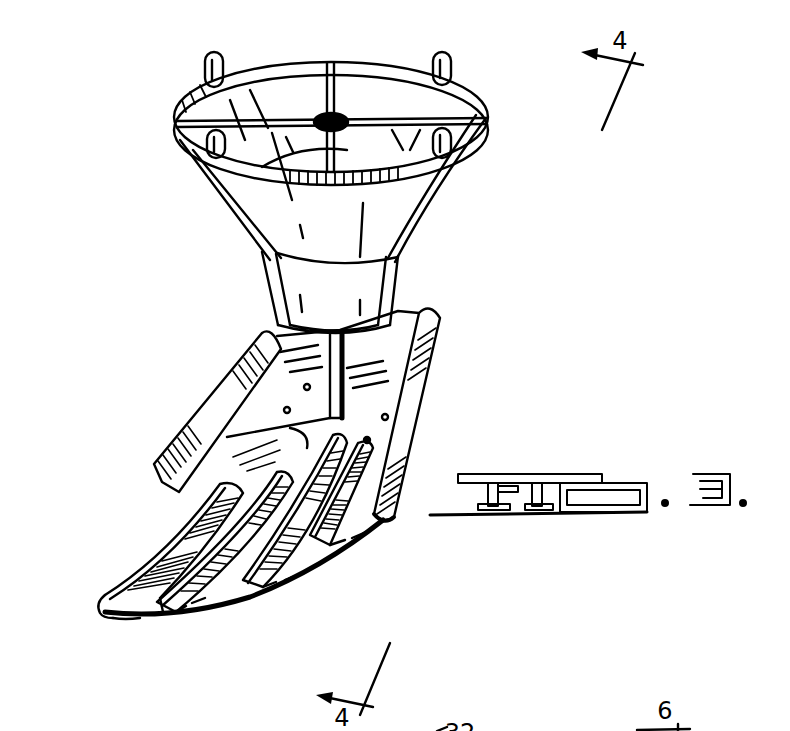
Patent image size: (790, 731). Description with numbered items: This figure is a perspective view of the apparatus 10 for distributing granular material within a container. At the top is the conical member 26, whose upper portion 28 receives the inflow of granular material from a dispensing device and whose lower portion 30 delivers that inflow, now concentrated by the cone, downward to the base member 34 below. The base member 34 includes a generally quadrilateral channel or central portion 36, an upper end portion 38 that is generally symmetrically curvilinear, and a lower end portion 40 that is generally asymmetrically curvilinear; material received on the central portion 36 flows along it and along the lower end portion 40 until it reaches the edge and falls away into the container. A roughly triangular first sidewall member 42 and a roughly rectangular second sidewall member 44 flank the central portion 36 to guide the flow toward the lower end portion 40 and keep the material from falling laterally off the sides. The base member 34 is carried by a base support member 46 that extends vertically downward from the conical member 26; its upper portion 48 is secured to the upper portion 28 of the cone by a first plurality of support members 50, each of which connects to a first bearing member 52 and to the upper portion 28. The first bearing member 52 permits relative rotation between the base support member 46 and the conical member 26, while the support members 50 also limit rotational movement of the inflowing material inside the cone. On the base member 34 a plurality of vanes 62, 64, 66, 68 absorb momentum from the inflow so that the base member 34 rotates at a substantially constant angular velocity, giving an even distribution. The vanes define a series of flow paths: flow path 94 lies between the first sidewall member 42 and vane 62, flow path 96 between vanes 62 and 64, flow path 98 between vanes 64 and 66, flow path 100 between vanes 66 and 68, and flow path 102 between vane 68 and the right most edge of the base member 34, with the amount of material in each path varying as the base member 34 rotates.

The apparatus 10 is at (130, 112).
The conical member 26 is at (433, 203).
The upper portion 28 is at (487, 102).
The lower portion 30 is at (390, 317).
The base member 34 is at (397, 537).
The central portion 36 is at (227, 437).
The upper end portion 38 is at (383, 353).
The lower end portion 40 is at (281, 606).
The first sidewall member 42 is at (214, 414).
The second sidewall member 44 is at (404, 421).
The base support member 46 is at (333, 365).
The upper portion 48 is at (333, 140).
The first plurality of support members 50 is at (335, 80).
The first bearing member 52 is at (322, 110).
The vane 62 is at (183, 545).
The vane 64 is at (178, 623).
The vane 66 is at (270, 593).
The vane 68 is at (338, 543).
The flow path 94 is at (145, 558).
The flow path 96 is at (122, 623).
The flow path 98 is at (220, 617).
The flow path 100 is at (312, 580).
The flow path 102 is at (377, 530).